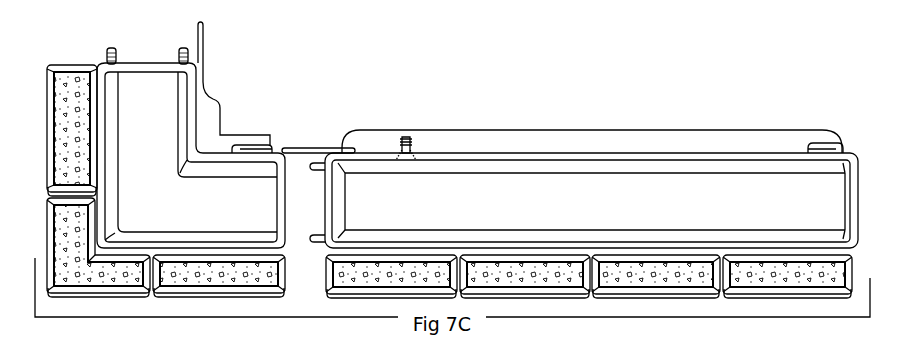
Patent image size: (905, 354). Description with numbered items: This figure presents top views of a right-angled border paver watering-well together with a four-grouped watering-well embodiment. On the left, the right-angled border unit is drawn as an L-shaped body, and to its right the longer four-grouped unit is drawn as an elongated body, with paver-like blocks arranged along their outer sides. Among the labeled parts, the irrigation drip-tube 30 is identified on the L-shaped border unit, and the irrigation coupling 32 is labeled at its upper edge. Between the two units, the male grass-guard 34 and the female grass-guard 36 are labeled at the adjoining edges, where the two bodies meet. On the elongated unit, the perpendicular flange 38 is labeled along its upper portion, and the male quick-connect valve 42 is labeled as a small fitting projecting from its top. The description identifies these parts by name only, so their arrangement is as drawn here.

The irrigation drip-tube 30 is at (183, 94).
The irrigation coupling 32 is at (107, 49).
The male grass-guard 34 is at (323, 145).
The female grass-guard 36 is at (269, 143).
The perpendicular flange 38 is at (473, 139).
The male quick-connect valve 42 is at (405, 134).